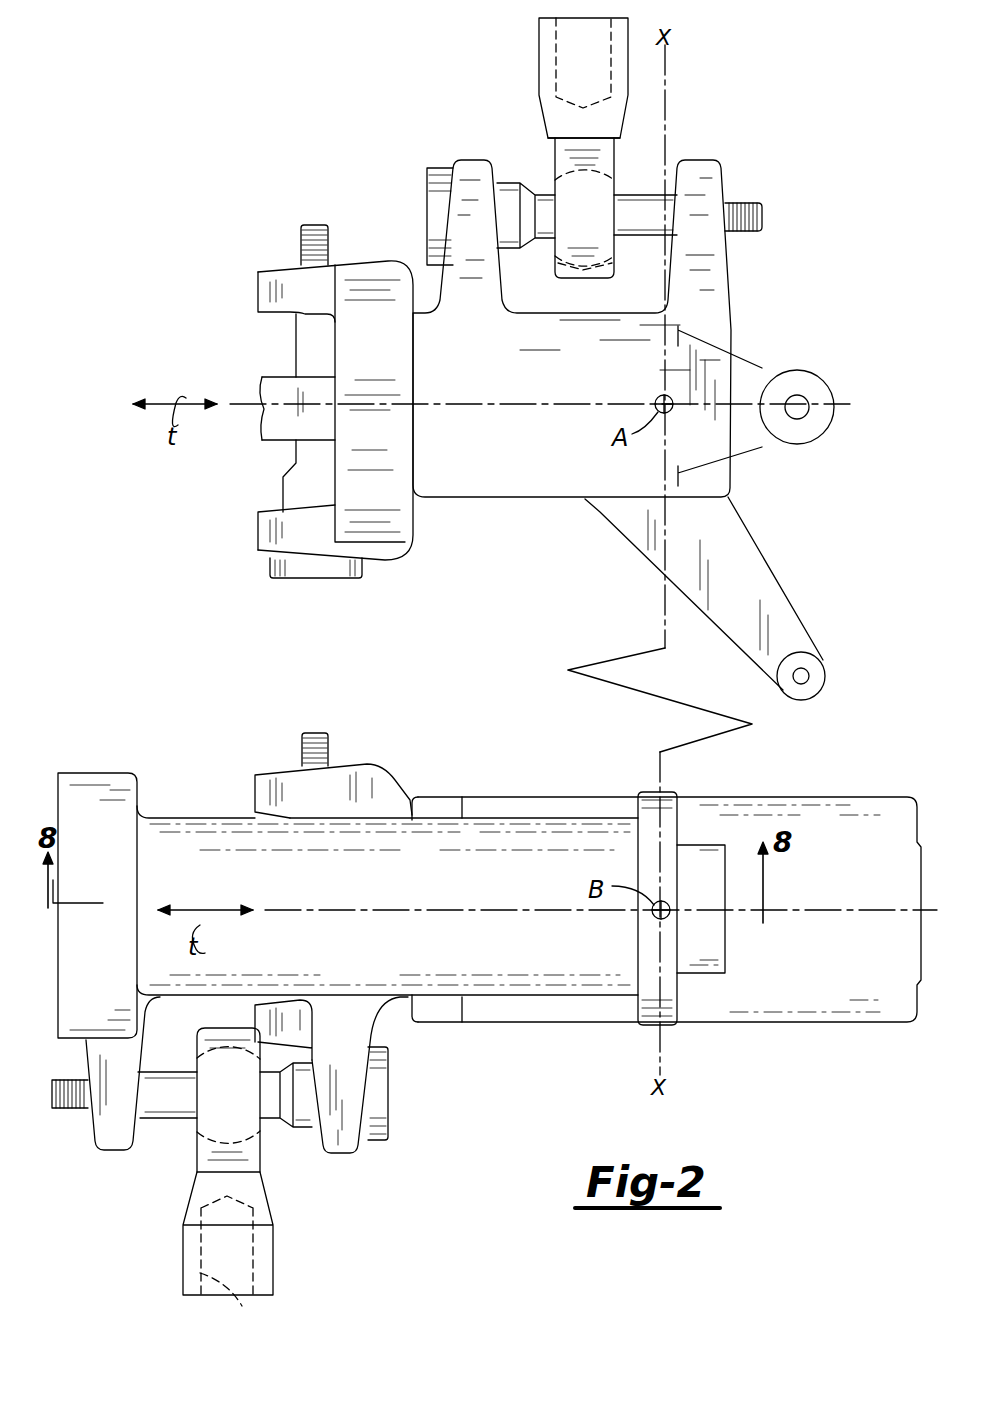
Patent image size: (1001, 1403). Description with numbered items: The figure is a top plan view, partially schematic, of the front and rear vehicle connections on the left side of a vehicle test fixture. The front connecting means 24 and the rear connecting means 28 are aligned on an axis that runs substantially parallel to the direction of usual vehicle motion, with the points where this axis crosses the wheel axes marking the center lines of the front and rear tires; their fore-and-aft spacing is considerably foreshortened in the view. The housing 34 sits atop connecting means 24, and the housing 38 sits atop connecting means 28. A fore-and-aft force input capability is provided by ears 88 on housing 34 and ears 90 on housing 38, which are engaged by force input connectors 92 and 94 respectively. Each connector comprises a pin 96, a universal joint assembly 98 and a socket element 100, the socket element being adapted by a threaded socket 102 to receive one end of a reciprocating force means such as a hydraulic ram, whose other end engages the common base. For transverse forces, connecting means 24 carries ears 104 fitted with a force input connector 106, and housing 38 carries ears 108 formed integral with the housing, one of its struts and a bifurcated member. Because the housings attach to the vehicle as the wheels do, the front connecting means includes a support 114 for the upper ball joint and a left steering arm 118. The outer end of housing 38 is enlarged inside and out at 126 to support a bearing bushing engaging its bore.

The connecting means 24 is at (532, 560).
The connecting means 28 is at (498, 1064).
The housing 34 is at (462, 492).
The housing 38 is at (208, 800).
The ears 88 is at (472, 166).
The ears 90 is at (112, 1148).
The force input connector 92 is at (549, 186).
The force input connector 94 is at (268, 1125).
The pin 96 is at (316, 225).
The universal joint assembly 98 is at (577, 270).
The socket element 100 is at (539, 72).
The threaded socket 102 is at (557, 37).
The ears 104 is at (262, 296).
The force input connector 106 is at (286, 363).
The ears 108 is at (262, 792).
The support 114 is at (805, 382).
The steering arm 118 is at (790, 627).
The enlarged end 126 is at (105, 785).